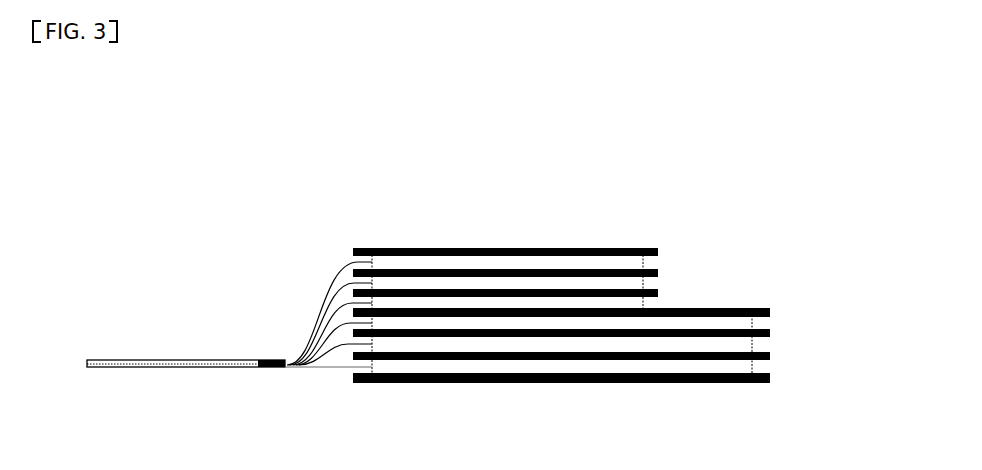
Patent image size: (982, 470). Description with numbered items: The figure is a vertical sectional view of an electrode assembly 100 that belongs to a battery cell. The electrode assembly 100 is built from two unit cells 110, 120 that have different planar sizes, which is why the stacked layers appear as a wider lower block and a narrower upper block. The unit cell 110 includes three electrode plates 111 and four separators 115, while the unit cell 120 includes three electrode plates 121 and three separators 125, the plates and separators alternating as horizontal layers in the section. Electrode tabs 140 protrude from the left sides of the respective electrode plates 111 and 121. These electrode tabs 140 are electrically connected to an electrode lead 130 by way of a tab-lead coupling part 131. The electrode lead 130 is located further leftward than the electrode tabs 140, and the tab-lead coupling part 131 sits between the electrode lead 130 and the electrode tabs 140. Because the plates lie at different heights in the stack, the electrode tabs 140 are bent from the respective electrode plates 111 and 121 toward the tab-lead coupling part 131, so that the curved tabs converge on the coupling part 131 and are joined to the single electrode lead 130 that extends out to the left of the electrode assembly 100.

The electrode assembly 100 is at (115, 143).
The unit cell 110 is at (621, 340).
The electrode plate 111 is at (742, 368).
The separator 115 is at (745, 382).
The unit cell 120 is at (571, 247).
The electrode plate 121 is at (632, 265).
The separator 125 is at (598, 248).
The electrode lead 130 is at (216, 352).
The tab-lead coupling part 131 is at (270, 358).
The electrode tab 140 is at (317, 279).